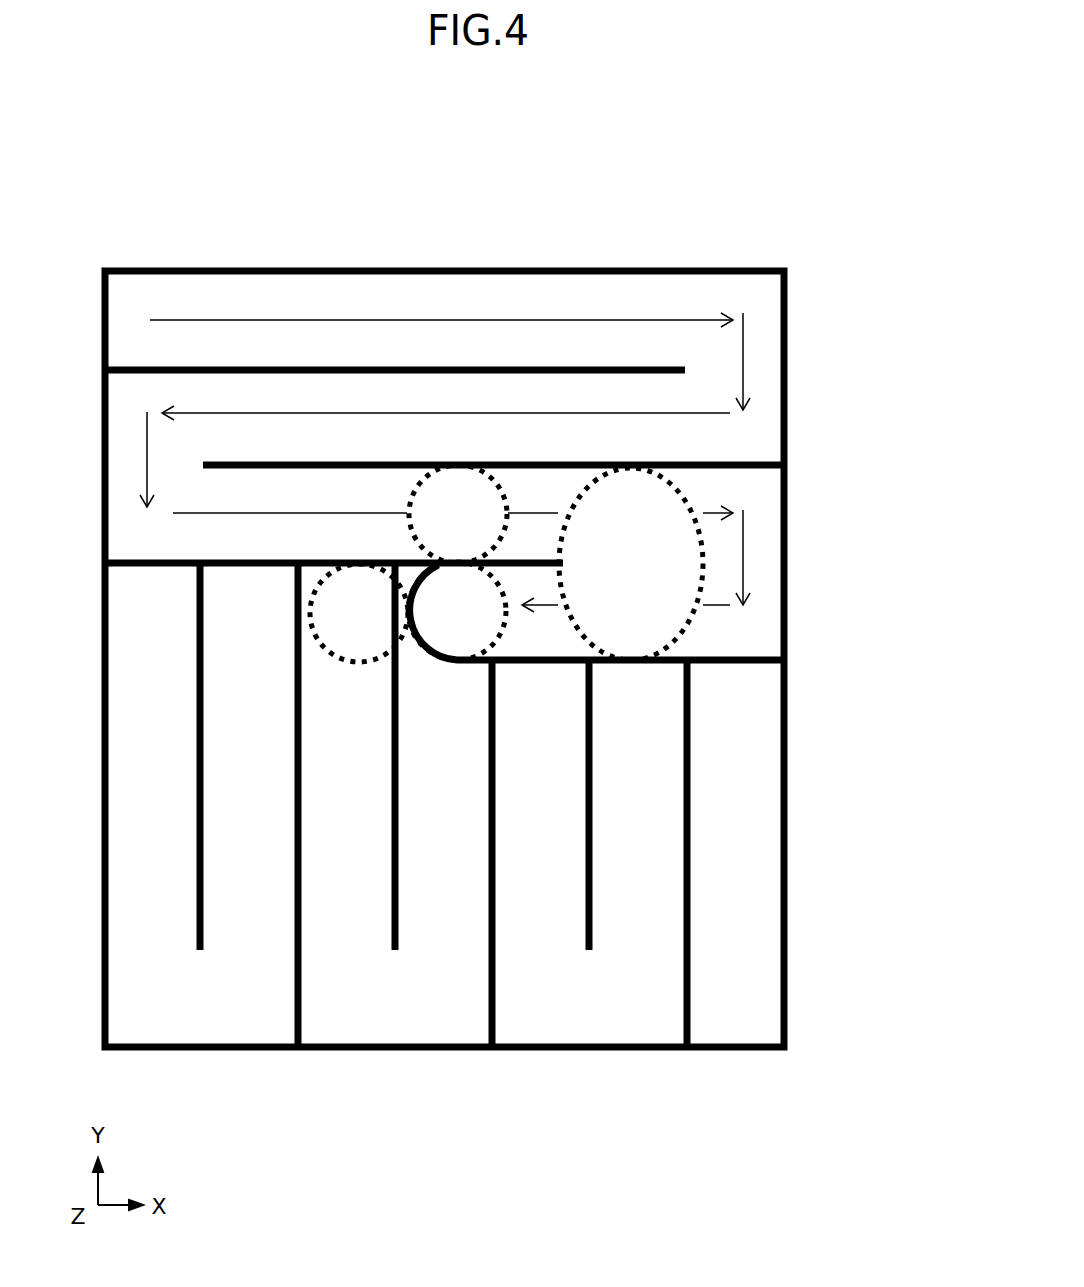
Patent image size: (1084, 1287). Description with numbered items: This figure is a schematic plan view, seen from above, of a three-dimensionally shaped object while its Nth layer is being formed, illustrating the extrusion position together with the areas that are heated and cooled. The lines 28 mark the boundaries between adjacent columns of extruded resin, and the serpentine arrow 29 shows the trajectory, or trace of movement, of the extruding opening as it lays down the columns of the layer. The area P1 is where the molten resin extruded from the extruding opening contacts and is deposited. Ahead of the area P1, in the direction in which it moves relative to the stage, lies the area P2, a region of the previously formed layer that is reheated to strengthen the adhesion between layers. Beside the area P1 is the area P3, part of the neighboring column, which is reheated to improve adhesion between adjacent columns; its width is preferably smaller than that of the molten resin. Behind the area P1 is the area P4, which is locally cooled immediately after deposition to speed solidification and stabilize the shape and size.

The line 28 is at (792, 328).
The arrow 29 is at (483, 316).
The area P1 is at (457, 611).
The area P2 is at (359, 613).
The area P3 is at (458, 514).
The area P4 is at (631, 564).